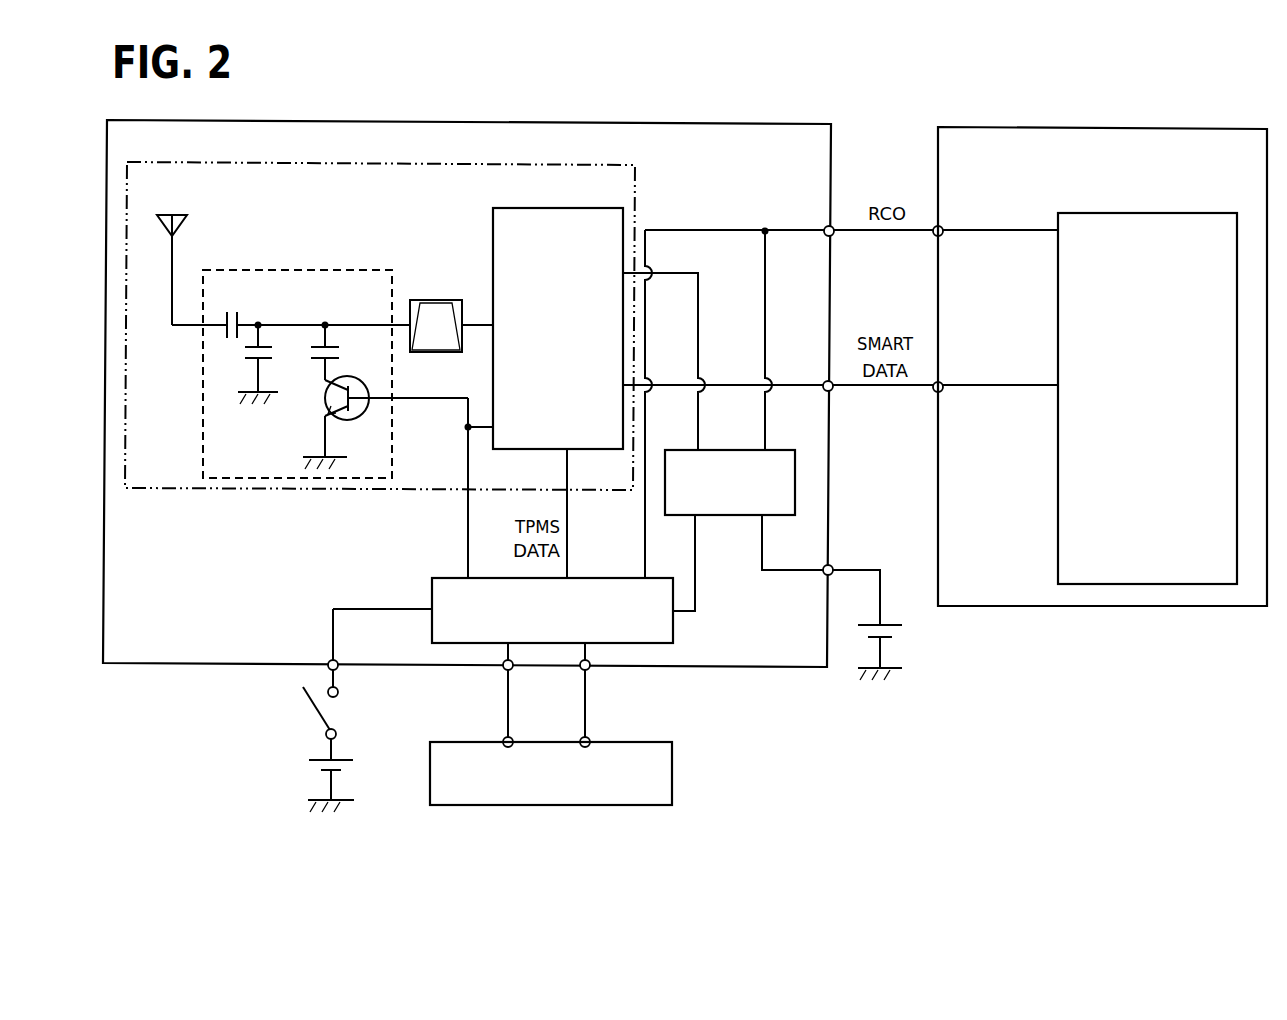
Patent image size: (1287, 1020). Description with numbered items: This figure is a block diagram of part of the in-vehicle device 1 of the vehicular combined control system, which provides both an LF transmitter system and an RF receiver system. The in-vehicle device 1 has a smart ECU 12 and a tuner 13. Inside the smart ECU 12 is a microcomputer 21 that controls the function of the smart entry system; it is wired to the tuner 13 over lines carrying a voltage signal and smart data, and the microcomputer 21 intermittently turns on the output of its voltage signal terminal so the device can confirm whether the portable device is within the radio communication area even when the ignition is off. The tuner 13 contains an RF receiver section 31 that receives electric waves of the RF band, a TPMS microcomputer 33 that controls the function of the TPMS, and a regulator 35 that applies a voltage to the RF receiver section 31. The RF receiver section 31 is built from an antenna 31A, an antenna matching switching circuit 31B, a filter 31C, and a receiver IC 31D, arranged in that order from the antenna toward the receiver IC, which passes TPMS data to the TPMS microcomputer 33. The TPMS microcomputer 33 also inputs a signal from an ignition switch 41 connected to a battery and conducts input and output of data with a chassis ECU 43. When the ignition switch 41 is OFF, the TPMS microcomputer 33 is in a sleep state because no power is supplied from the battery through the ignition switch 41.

The in-vehicle device 1 is at (892, 96).
The smart ECU 12 is at (1100, 127).
The tuner 13 is at (731, 122).
The microcomputer 21 is at (1195, 213).
The RF receiver section 31 is at (637, 188).
The antenna 31A is at (173, 239).
The antenna matching switching circuit 31B is at (328, 270).
The filter 31C is at (436, 300).
The receiver IC 31D is at (560, 208).
The TPMS microcomputer 33 is at (673, 620).
The regulator 35 is at (770, 450).
The ignition switch 41 is at (313, 706).
The chassis ECU 43 is at (672, 772).